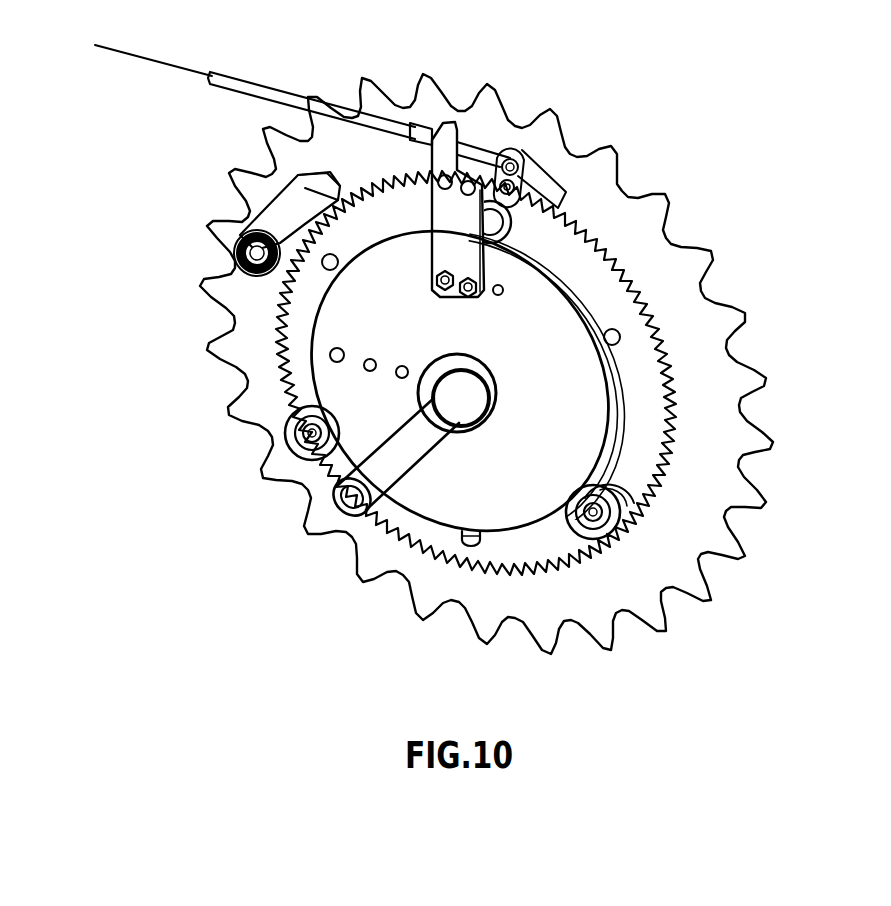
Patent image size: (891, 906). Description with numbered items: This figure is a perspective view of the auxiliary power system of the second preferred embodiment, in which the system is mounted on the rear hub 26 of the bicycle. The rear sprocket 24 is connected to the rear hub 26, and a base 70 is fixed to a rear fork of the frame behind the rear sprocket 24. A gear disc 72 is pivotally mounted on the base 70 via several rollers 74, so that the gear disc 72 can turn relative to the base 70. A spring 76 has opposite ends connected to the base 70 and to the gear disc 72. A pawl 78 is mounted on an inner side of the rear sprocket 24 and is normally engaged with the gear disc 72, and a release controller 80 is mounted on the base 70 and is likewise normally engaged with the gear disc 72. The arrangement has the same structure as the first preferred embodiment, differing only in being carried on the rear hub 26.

The rear sprocket 24 is at (700, 262).
The rear hub 26 is at (373, 465).
The base 70 is at (425, 495).
The gear disc 72 is at (635, 407).
The rollers 74 is at (480, 223).
The spring 76 is at (473, 540).
The pawl 78 is at (278, 214).
The release controller 80 is at (520, 125).